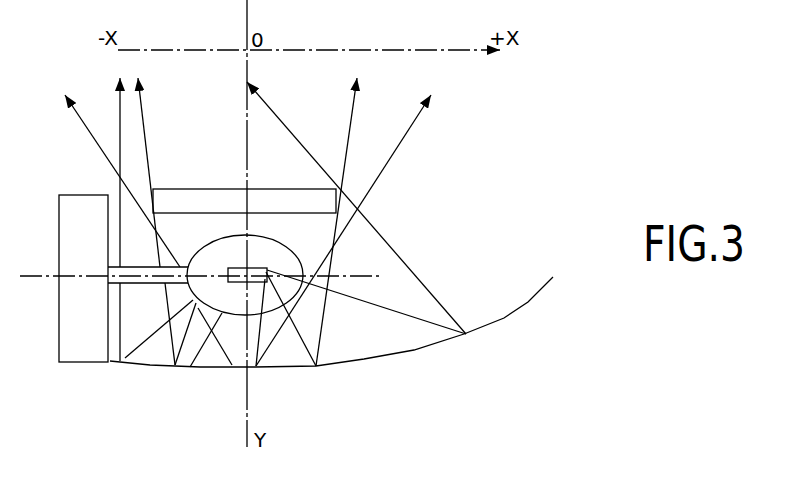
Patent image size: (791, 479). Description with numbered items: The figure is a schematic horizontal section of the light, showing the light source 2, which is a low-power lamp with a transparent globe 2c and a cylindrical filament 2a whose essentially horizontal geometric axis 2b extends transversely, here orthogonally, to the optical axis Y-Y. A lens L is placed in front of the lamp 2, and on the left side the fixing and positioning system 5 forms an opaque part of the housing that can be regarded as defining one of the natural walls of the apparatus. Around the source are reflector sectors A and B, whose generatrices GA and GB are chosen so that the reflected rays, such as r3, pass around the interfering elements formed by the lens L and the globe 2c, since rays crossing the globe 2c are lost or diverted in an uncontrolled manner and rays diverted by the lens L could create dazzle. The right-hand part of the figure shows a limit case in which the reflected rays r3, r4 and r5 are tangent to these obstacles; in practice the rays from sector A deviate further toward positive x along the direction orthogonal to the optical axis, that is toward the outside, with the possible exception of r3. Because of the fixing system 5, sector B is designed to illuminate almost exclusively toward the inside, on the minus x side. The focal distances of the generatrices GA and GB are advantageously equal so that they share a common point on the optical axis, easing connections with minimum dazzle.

The fixing and positioning system 5 is at (69, 190).
The geometric axis 2b is at (75, 278).
The lens L is at (204, 188).
The light source 2 is at (243, 322).
The filament 2a is at (266, 268).
The globe 2c is at (217, 310).
The generatrix of sector B GB is at (220, 370).
The generatrix of sector A GA is at (434, 350).
The sector B is at (150, 368).
The sector A is at (533, 310).
The reflected ray r3 is at (400, 143).
The reflected ray r4 is at (353, 110).
The reflected ray r5 is at (275, 114).